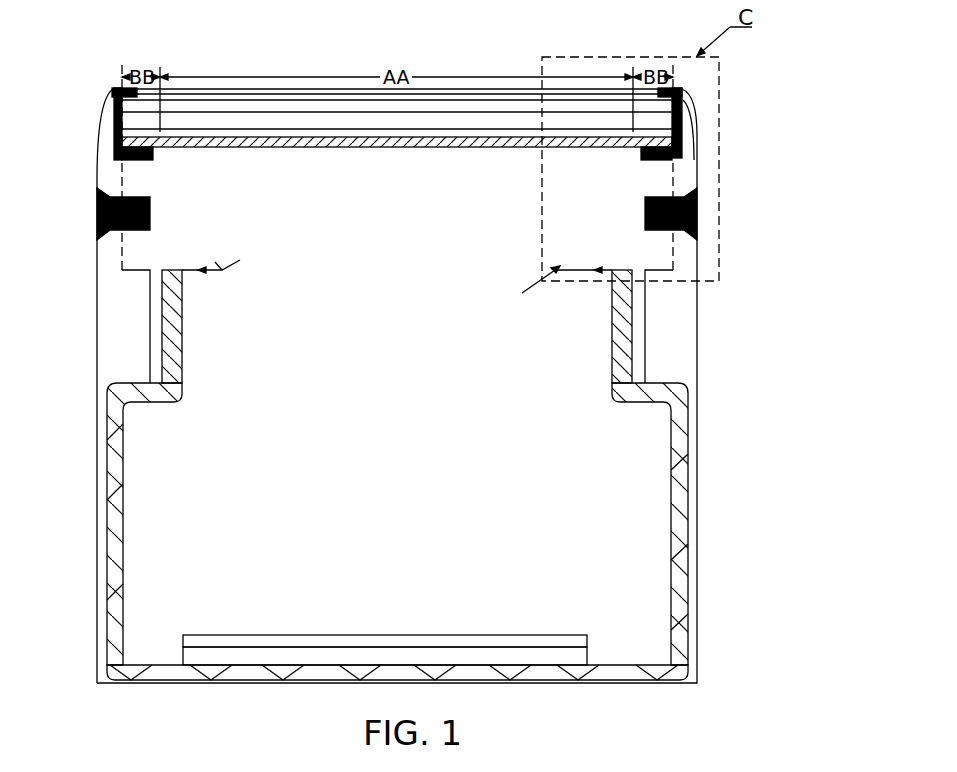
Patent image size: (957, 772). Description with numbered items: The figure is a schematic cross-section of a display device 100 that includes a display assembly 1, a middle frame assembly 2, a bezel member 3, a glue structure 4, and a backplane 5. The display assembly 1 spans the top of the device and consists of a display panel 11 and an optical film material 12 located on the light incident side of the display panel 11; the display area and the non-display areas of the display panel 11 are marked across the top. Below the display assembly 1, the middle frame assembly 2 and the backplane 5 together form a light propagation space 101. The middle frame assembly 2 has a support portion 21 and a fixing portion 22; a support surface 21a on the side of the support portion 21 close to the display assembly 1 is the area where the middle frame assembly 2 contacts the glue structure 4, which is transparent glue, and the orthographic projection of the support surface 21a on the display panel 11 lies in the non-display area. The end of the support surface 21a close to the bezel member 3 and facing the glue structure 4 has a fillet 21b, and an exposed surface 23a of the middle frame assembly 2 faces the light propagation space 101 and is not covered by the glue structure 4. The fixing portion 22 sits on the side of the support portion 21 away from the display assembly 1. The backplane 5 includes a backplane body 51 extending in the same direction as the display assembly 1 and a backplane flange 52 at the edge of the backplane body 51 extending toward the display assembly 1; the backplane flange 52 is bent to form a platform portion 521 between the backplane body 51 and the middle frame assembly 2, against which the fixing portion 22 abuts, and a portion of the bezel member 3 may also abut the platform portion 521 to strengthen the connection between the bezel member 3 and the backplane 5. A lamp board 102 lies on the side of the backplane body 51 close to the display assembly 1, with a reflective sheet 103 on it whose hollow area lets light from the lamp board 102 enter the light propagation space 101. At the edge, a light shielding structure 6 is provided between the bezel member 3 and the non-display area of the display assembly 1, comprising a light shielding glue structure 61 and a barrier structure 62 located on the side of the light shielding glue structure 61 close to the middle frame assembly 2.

The display device 100 is at (115, 34).
The display assembly 1 is at (397, 163).
The display panel 11 is at (408, 120).
The optical film material 12 is at (467, 138).
The middle frame assembly 2 is at (397, 270).
The support portion 21 is at (522, 293).
The support surface 21a is at (637, 158).
The fillet 21b is at (673, 160).
The fixing portion 22 is at (640, 350).
The exposed surface 23a is at (636, 161).
The bezel member 3 is at (108, 147).
The glue structure 4 is at (153, 153).
The backplane 5 is at (397, 531).
The backplane body 51 is at (615, 673).
The backplane flange 52 is at (122, 470).
The platform portion 521 is at (648, 396).
The light shielding structure 6 is at (744, 135).
The light shielding glue structure 61 is at (683, 100).
The barrier structure 62 is at (683, 143).
The light propagation space 101 is at (390, 517).
The lamp board 102 is at (290, 633).
The reflective sheet 103 is at (432, 636).